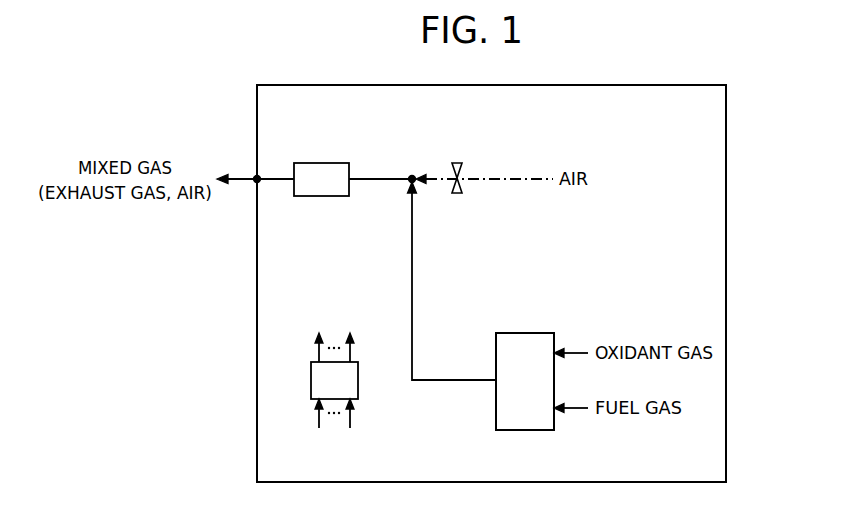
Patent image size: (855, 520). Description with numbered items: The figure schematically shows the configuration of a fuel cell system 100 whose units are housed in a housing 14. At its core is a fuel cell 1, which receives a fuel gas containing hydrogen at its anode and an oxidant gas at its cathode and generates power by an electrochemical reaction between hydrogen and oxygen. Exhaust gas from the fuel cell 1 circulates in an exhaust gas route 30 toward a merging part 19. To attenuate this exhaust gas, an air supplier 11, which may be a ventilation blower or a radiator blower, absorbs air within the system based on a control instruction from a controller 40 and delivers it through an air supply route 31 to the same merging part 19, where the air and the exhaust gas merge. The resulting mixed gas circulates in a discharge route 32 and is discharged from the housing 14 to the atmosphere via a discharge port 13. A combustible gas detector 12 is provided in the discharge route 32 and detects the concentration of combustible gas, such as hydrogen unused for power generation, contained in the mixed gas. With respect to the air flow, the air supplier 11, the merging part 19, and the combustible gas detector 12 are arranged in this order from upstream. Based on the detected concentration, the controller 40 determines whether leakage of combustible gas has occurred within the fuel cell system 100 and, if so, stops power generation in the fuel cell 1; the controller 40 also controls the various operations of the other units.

The fuel cell system 100 is at (693, 124).
The housing 14 is at (726, 222).
The discharge port 13 is at (257, 179).
The combustible gas detector 12 is at (332, 190).
The discharge route 32 is at (382, 178).
The merging part 19 is at (412, 176).
The air supply route 31 is at (498, 178).
The air supplier 11 is at (456, 163).
The exhaust gas route 30 is at (412, 283).
The fuel cell 1 is at (532, 394).
The controller 40 is at (345, 392).